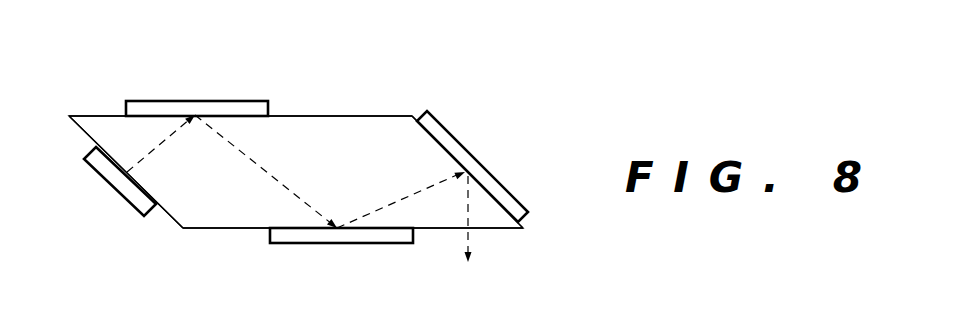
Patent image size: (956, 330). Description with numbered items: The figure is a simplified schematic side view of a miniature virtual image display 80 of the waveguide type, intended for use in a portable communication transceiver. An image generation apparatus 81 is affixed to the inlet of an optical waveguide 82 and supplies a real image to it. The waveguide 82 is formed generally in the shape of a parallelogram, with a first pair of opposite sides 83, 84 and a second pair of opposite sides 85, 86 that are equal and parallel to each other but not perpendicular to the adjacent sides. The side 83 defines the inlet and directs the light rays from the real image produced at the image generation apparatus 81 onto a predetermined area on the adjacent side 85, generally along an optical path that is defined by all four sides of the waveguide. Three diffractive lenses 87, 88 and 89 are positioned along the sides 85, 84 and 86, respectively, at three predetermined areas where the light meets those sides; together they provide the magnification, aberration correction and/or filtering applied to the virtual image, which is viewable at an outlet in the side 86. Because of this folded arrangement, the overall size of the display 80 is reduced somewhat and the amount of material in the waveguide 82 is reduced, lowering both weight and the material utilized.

The miniature virtual image display 80 is at (577, 147).
The image generation apparatus 81 is at (112, 190).
The optical waveguide 82 is at (386, 114).
The side 83 is at (82, 133).
The side 84 is at (528, 225).
The side 85 is at (321, 114).
The side 86 is at (218, 230).
The diffractive lens 87 is at (200, 100).
The diffractive lens 88 is at (478, 160).
The diffractive lens 89 is at (338, 244).